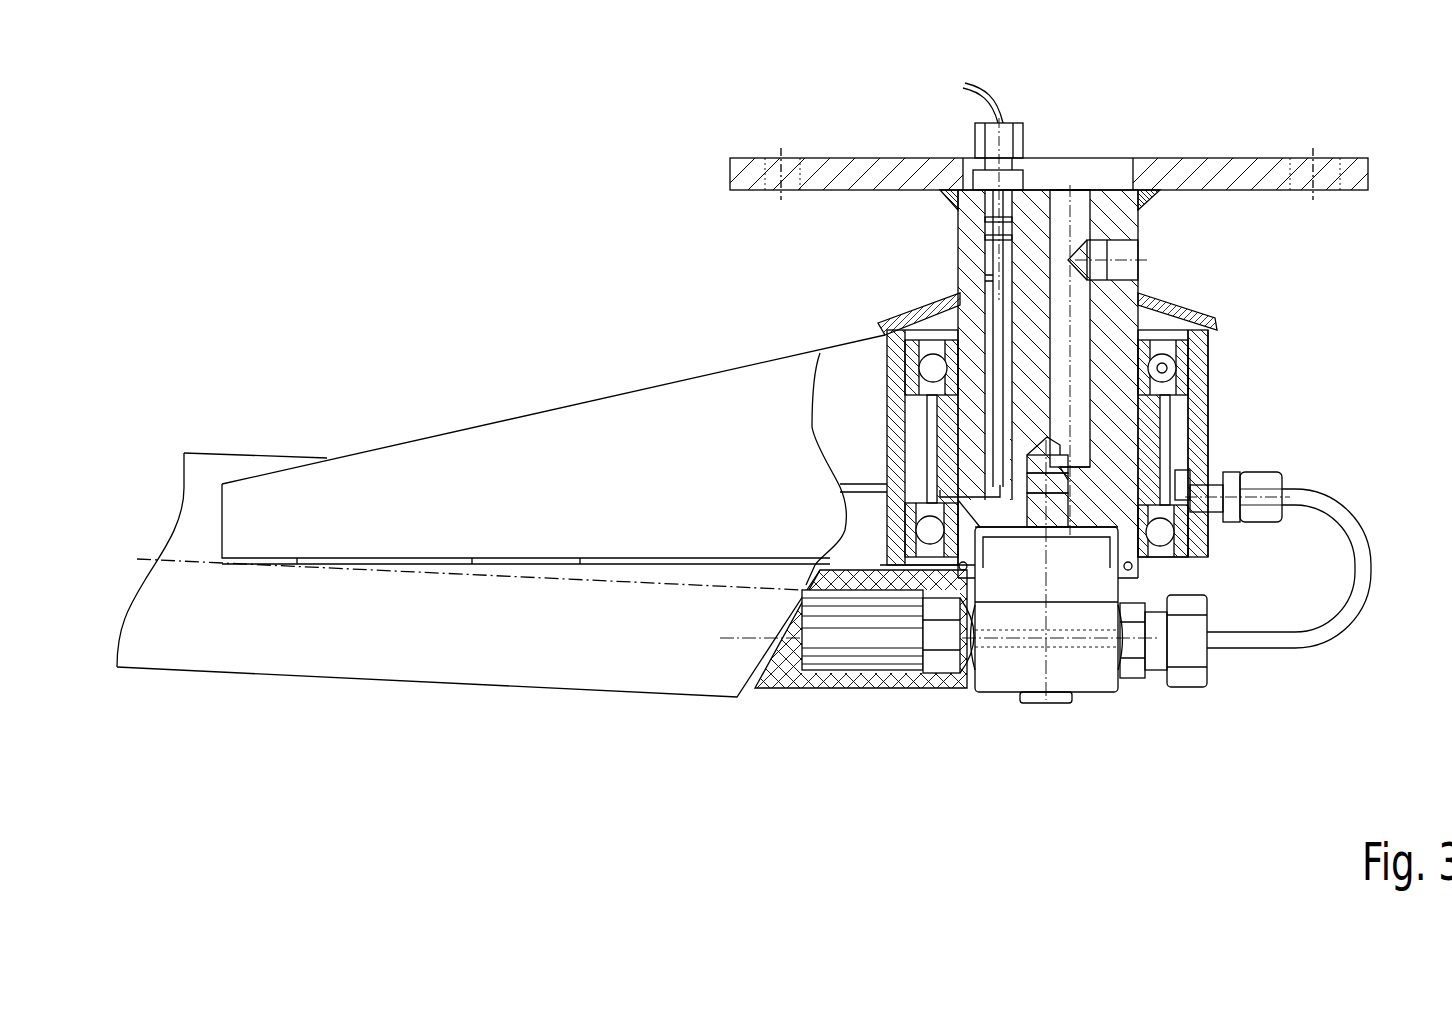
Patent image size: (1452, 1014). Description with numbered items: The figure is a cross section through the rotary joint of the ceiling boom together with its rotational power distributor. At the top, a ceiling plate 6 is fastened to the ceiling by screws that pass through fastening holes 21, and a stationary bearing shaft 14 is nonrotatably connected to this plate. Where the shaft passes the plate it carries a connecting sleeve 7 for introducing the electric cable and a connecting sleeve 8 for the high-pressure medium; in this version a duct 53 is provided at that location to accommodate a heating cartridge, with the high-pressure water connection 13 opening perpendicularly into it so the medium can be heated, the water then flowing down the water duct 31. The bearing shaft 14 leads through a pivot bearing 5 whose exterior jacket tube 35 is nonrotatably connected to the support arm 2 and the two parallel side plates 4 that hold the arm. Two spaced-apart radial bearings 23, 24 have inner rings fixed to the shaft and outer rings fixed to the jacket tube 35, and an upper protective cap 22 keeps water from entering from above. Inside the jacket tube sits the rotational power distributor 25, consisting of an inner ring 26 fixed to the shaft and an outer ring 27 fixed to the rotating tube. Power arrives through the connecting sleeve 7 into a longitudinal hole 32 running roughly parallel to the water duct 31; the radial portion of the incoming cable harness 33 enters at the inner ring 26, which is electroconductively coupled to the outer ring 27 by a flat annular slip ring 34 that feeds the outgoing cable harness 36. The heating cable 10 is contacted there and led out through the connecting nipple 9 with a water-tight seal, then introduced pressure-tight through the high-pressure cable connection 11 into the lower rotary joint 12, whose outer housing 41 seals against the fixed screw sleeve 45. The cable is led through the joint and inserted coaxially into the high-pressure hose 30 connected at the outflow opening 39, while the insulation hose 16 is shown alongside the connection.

The support arm 2 is at (587, 662).
The side plate 4 is at (638, 428).
The pivot bearing 5 is at (1258, 323).
The ceiling plate 6 is at (855, 172).
The connecting sleeve (electrical) 7 is at (998, 135).
The connecting sleeve (water) 8 is at (1050, 260).
The connecting nipple 9 is at (1282, 472).
The heating cable 10 is at (1308, 639).
The high-pressure cable connection 11 is at (1150, 658).
The rotary joint 12 is at (1002, 662).
The high-pressure water connection 13 is at (1125, 260).
The bearing shaft 14 is at (975, 250).
The insulation hose 16 is at (873, 680).
The fastening hole 21 is at (795, 172).
The protective cap 22 is at (1195, 320).
The radial bearing (top) 23 is at (1180, 385).
The radial bearing (bottom) 24 is at (1200, 557).
The rotational power distributor 25 is at (805, 340).
The inner ring 26 is at (1145, 437).
The outer ring 27 is at (1180, 448).
The high-pressure hose 30 is at (792, 643).
The water duct 31 is at (1073, 337).
The longitudinal hole (electrical) 32 is at (990, 277).
The cable harness (incoming) 33 is at (980, 487).
The slip ring 34 is at (930, 457).
The jacket tube 35 is at (897, 368).
The cable harness (outgoing) 36 is at (1185, 478).
The outflow opening 39 is at (958, 658).
The outer housing (of 12) 41 is at (1046, 556).
The screw sleeve 45 is at (1165, 560).
The duct (for heating cartridge) 53 is at (1083, 213).